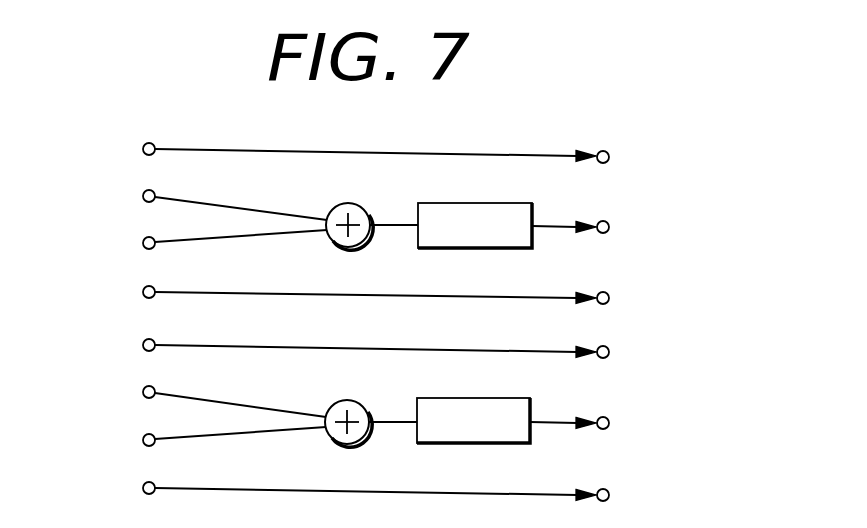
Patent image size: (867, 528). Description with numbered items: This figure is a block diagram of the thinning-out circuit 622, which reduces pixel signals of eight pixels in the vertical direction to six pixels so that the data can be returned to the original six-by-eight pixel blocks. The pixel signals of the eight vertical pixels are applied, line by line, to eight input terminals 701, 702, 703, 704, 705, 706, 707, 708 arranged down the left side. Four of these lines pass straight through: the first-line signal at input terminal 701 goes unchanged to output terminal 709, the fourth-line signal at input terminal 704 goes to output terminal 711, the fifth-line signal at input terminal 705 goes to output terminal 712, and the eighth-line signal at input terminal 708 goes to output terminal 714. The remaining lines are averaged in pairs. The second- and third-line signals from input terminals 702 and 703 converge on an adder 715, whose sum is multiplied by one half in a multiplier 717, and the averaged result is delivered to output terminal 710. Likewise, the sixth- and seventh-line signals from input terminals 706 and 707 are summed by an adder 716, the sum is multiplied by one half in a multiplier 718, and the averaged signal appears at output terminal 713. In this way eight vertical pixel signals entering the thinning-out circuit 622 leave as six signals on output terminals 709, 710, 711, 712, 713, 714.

The thinning-out circuit 622 is at (377, 135).
The input terminal 701 is at (143, 149).
The input terminal 702 is at (143, 196).
The input terminal 703 is at (143, 243).
The input terminal 704 is at (143, 292).
The input terminal 705 is at (143, 345).
The input terminal 706 is at (143, 392).
The input terminal 707 is at (143, 440).
The input terminal 708 is at (143, 488).
The output terminal 709 is at (609, 157).
The output terminal 710 is at (609, 227).
The output terminal 711 is at (609, 298).
The output terminal 712 is at (609, 352).
The output terminal 713 is at (609, 423).
The output terminal 714 is at (609, 495).
The adder 715 is at (357, 205).
The adder 716 is at (356, 401).
The multiplier 717 is at (525, 203).
The multiplier 718 is at (525, 398).